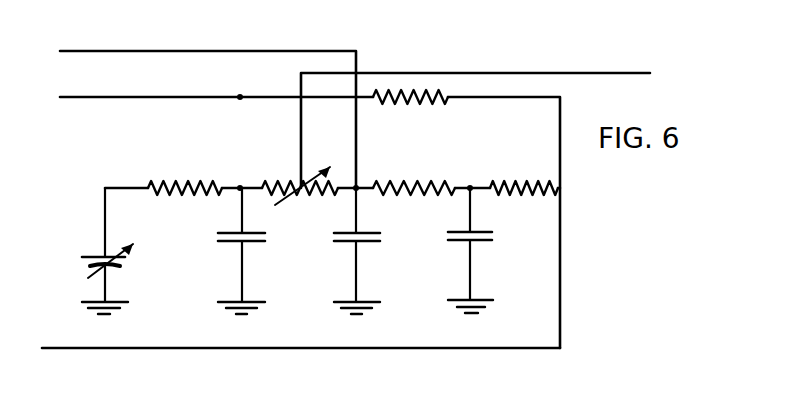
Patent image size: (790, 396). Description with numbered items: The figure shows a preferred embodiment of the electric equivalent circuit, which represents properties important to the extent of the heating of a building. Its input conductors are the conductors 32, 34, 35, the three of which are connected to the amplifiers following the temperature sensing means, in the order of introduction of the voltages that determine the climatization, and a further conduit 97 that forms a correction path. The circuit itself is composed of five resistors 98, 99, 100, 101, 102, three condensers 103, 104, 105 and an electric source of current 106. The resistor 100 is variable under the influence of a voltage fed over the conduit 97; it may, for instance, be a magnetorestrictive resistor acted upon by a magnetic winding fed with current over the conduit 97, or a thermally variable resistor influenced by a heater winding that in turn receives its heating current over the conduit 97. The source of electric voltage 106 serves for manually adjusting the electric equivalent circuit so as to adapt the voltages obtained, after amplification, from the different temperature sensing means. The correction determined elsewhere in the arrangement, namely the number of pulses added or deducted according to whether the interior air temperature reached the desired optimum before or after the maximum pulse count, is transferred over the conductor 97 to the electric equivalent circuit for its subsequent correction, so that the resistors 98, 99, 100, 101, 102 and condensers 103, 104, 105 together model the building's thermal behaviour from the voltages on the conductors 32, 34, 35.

The conductor 32 is at (222, 350).
The conductor 34 is at (233, 50).
The conductor 35 is at (112, 97).
The conduit 97 is at (540, 72).
The resistor 98 is at (432, 104).
The resistor 99 is at (197, 196).
The variable resistor 100 is at (284, 181).
The resistor 101 is at (430, 197).
The resistor 102 is at (536, 197).
The condenser 103 is at (253, 244).
The condenser 104 is at (368, 244).
The condenser 105 is at (485, 244).
The source of electric voltage 106 is at (125, 265).